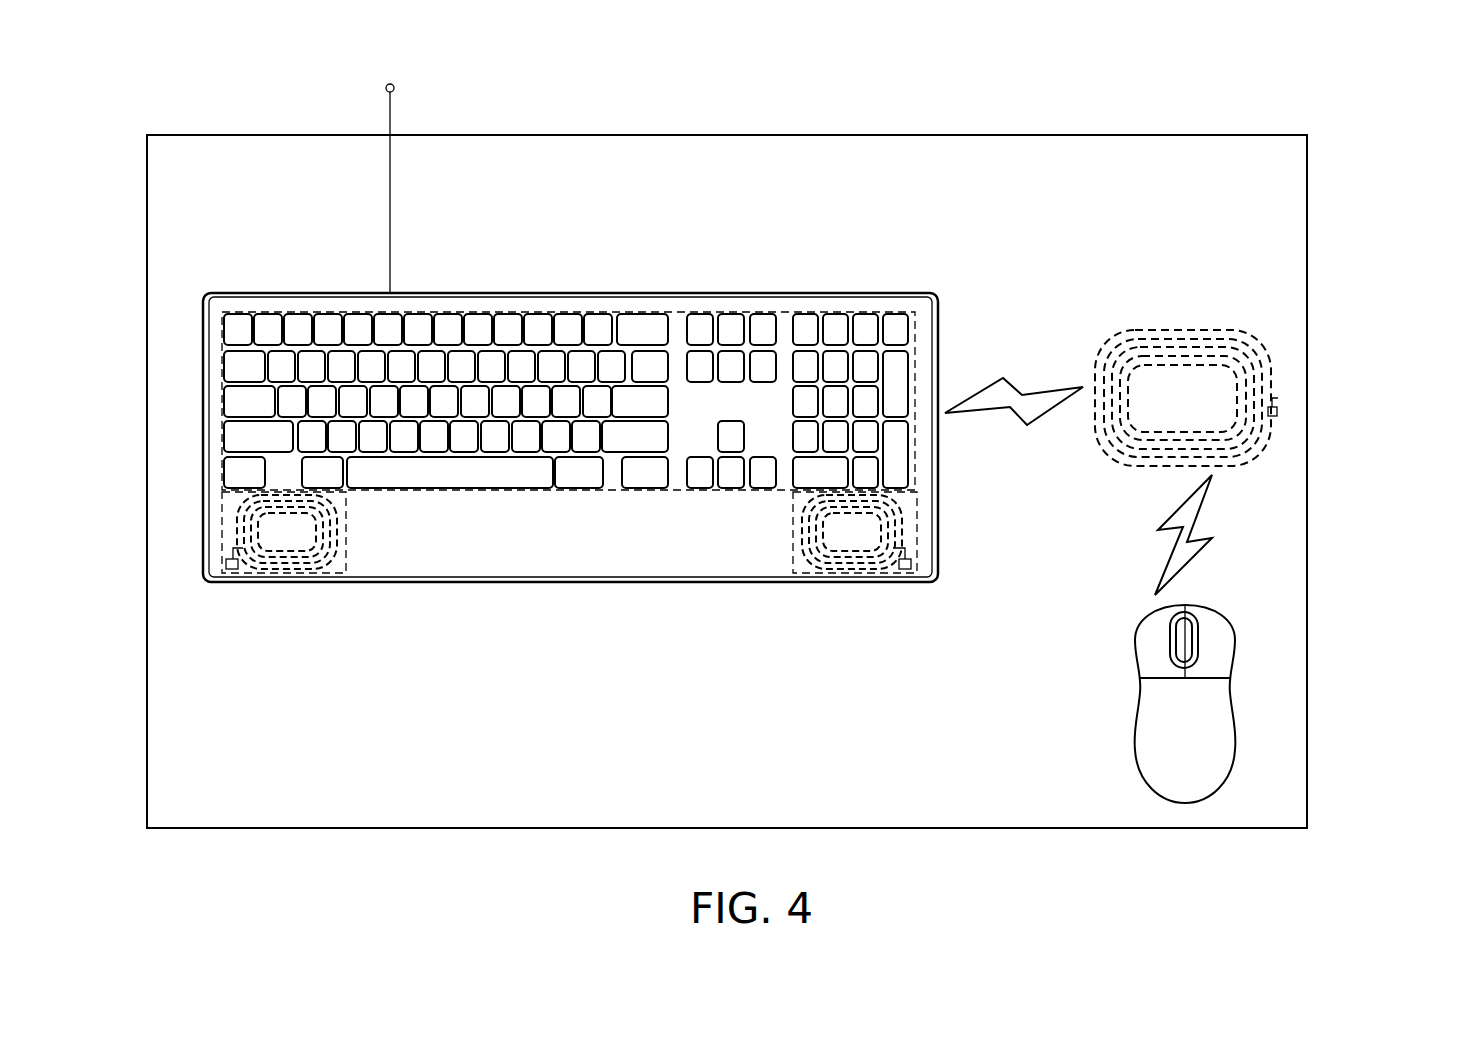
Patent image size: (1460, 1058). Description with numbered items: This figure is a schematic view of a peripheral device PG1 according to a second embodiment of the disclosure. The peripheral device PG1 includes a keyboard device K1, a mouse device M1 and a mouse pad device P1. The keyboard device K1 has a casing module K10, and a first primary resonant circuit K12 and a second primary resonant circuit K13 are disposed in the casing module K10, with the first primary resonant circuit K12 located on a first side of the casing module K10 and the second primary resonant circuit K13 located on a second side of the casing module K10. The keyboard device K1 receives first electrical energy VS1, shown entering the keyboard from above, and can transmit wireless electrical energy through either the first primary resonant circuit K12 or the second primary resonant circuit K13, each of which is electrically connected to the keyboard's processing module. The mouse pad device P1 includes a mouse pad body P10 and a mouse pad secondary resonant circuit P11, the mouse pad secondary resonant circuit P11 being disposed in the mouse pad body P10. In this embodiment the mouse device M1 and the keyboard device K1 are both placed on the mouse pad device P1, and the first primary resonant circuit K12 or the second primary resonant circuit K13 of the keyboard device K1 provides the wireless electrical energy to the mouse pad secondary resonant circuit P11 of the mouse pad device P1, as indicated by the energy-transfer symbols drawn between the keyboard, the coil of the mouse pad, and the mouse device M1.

The peripheral device PG1 is at (1370, 95).
The mouse pad body P10 is at (1243, 150).
The mouse pad device P1 is at (1285, 230).
The first electrical energy VS1 is at (388, 171).
The keyboard device K1 is at (934, 293).
The casing module K10 is at (777, 303).
The second primary resonant circuit K13 is at (222, 512).
The first primary resonant circuit K12 is at (918, 514).
The mouse pad secondary resonant circuit P11 is at (1278, 398).
The mouse device M1 is at (1140, 693).